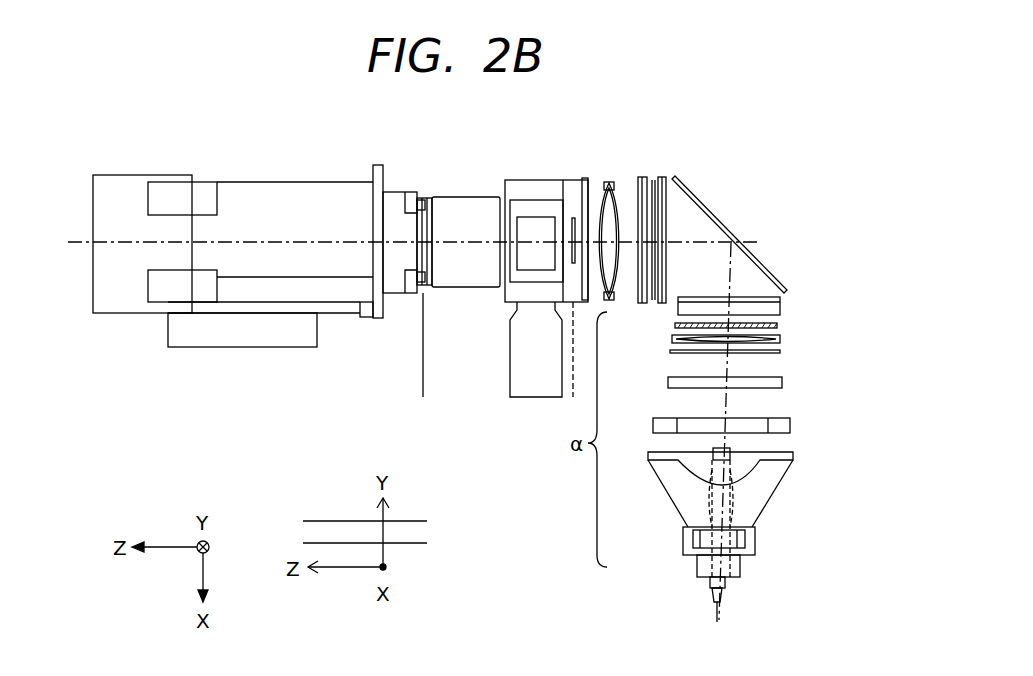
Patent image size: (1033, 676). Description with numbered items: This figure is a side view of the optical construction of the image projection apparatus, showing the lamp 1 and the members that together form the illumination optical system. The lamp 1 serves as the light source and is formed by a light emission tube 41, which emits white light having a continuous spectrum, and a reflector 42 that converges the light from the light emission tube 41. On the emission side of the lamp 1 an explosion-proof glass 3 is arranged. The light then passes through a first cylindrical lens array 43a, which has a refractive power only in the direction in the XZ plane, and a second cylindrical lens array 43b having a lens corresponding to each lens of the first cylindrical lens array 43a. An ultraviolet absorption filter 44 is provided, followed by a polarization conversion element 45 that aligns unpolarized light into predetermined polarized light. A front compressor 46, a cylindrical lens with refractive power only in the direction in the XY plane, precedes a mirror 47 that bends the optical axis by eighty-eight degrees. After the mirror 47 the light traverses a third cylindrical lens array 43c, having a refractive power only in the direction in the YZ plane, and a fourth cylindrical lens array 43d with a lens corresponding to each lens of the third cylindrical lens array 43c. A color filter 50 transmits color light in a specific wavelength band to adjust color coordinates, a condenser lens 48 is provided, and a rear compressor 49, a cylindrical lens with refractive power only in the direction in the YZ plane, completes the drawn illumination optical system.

The lamp 1 is at (728, 535).
The explosion-proof glass 3 is at (791, 427).
The light emission tube 41 is at (683, 541).
The reflector 42 is at (775, 498).
The first cylindrical lens array 43a is at (783, 383).
The second cylindrical lens array 43b is at (781, 340).
The third cylindrical lens array 43c is at (663, 177).
The fourth cylindrical lens array 43d is at (643, 177).
The ultraviolet absorption filter 44 is at (781, 352).
The polarization conversion element 45 is at (779, 326).
The front compressor 46 is at (782, 305).
The mirror 47 is at (743, 240).
The condenser lens 48 is at (607, 183).
The rear compressor 49 is at (585, 178).
The color filter 50 is at (654, 180).